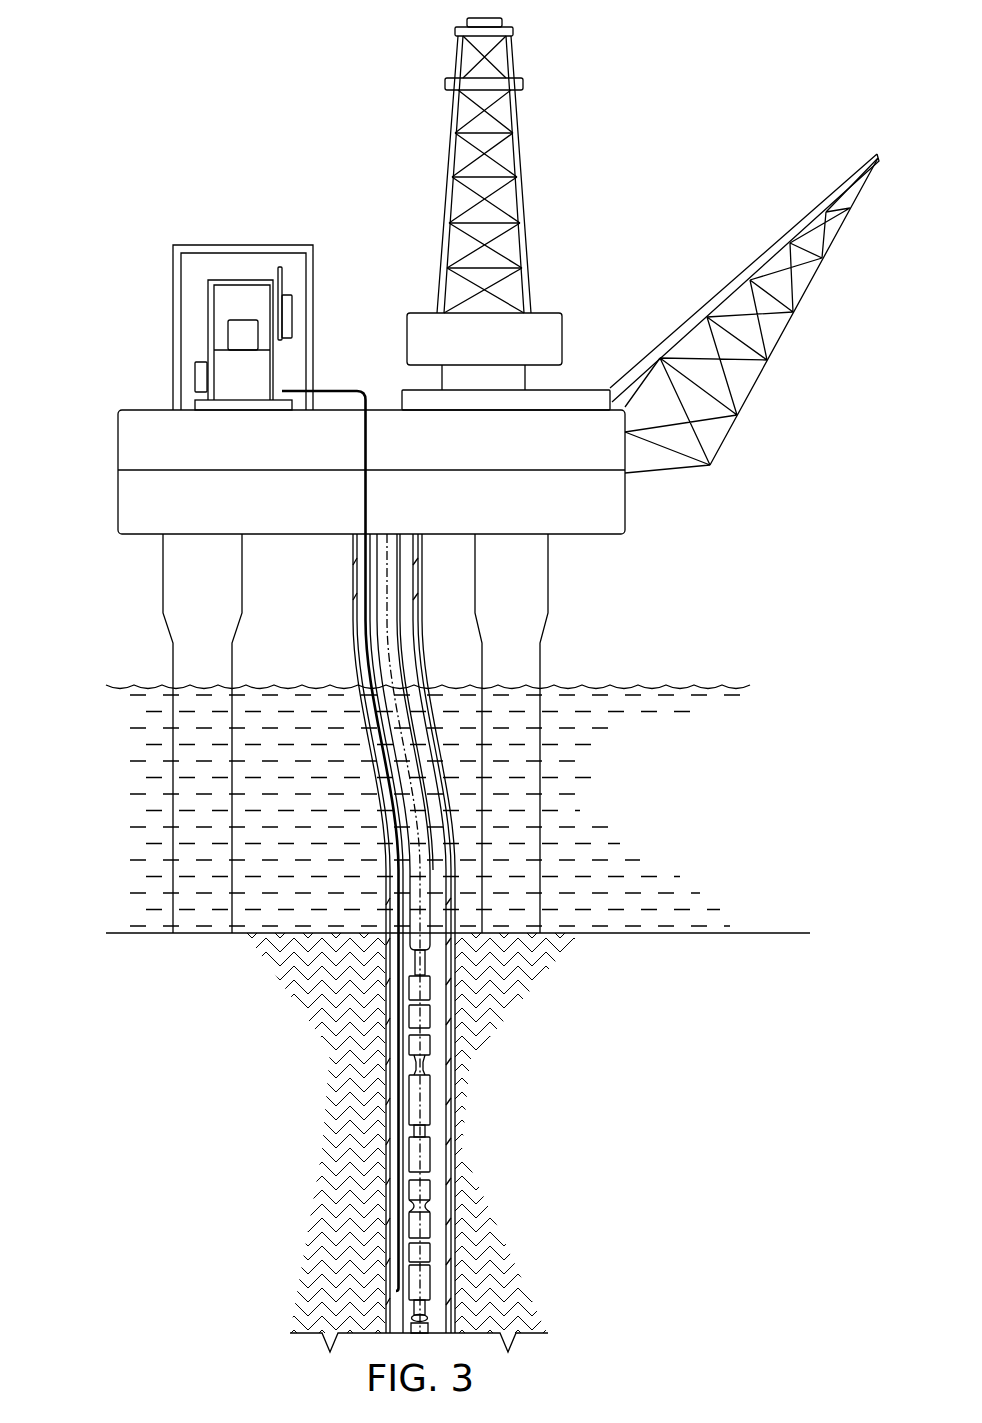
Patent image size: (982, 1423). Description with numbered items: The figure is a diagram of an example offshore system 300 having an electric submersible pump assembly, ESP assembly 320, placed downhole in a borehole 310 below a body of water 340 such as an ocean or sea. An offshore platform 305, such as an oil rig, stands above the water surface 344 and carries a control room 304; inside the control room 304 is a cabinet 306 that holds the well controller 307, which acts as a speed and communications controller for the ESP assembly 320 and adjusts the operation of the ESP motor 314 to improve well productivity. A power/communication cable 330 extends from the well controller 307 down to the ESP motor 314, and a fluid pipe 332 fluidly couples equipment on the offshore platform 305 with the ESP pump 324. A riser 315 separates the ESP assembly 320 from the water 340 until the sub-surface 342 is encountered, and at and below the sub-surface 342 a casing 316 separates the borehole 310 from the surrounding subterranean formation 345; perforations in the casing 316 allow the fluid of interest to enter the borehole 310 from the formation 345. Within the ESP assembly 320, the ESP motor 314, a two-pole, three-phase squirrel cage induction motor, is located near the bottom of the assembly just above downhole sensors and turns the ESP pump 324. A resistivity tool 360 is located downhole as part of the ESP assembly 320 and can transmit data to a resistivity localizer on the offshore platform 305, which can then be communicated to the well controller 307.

The offshore system 300 is at (252, 102).
The control room 304 is at (243, 245).
The offshore platform 305 is at (118, 436).
The cabinet 306 is at (208, 315).
The well controller 307 is at (228, 345).
The power/communication cable 330 is at (365, 505).
The fluid pipe 332 is at (374, 618).
The water surface 344 is at (662, 685).
The body of water 340 is at (636, 795).
The sub-surface 342 is at (762, 933).
The riser 315 is at (386, 869).
The subterranean formation 345 is at (243, 1140).
The ESP pump 324 is at (429, 1065).
The ESP assembly 320 is at (459, 1112).
The casing 316 is at (386, 1182).
The borehole 310 is at (441, 1180).
The ESP motor 314 is at (431, 1290).
The resistivity tool 360 is at (409, 1316).